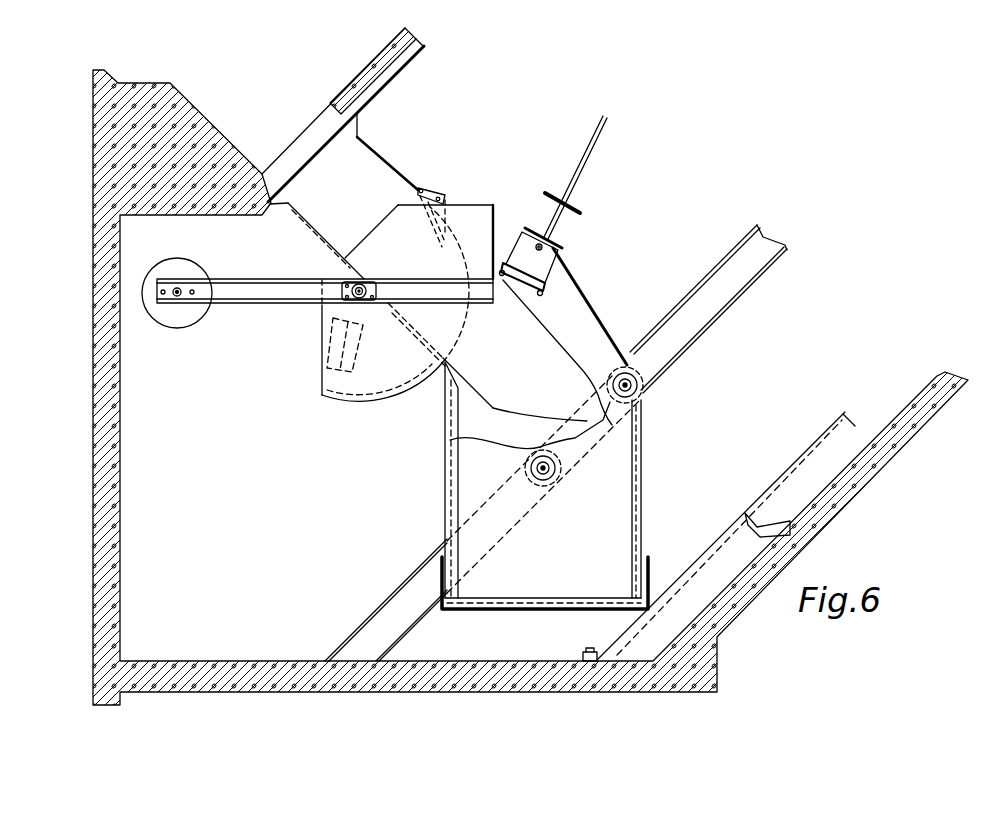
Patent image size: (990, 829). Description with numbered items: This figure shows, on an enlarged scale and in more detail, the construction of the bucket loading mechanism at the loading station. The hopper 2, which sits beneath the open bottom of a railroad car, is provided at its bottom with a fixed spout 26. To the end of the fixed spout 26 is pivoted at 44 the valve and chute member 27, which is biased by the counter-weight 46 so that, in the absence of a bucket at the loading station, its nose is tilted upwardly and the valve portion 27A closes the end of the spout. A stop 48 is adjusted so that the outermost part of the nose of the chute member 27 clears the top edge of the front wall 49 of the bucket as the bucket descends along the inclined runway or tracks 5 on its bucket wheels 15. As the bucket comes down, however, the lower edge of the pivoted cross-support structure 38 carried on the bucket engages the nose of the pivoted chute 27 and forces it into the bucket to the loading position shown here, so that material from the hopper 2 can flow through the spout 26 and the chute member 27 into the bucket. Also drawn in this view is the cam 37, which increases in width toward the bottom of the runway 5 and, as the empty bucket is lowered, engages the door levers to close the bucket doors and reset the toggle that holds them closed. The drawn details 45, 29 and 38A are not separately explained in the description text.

The hopper 2 is at (378, 62).
The fixed spout 26 is at (365, 152).
The pivot 44 is at (355, 282).
The counter-weight 46 is at (168, 322).
The stop 48 is at (327, 368).
The valve and chute member 27 is at (398, 338).
The valve portion 27A is at (367, 403).
The discharge spout 45 is at (477, 378).
The front wall 49 is at (445, 432).
The elevator frame bottom 29 is at (550, 603).
The bucket wheels 15 is at (642, 397).
The pivoted cross-support structure 38 is at (543, 272).
The lever cable 38A is at (530, 425).
The inclined runway or tracks 5 is at (703, 333).
The cam 37 is at (720, 547).